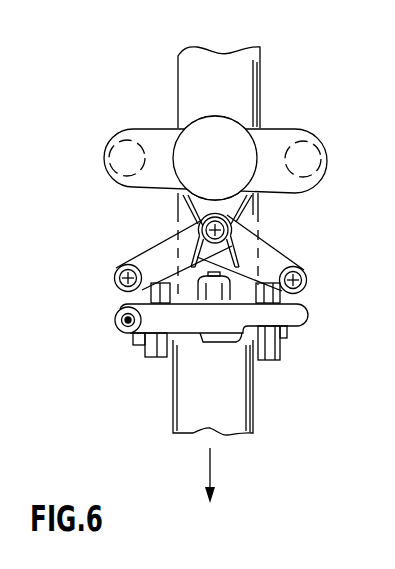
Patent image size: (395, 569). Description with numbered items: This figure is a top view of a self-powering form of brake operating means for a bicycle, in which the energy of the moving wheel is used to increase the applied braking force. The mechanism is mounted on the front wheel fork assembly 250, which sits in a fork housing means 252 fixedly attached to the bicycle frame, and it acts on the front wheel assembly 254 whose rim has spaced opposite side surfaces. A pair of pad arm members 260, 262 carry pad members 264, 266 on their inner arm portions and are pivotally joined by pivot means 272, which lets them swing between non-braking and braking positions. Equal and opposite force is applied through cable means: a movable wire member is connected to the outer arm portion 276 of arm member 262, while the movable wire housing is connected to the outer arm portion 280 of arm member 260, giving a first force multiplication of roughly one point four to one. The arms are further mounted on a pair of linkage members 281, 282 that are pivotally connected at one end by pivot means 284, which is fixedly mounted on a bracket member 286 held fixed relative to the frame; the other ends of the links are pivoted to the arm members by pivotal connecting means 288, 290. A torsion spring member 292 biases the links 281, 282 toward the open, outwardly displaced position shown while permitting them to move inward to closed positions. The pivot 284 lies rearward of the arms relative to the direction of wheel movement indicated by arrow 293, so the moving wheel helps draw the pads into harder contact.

The front wheel fork assembly 250 is at (280, 124).
The fork housing means 252 is at (212, 110).
The front wheel assembly 254 is at (256, 436).
The pad arm member 260 is at (202, 312).
The pad arm member 262 is at (202, 305).
The pad member 264 is at (145, 357).
The pad member 266 is at (277, 358).
The pivot means 272 is at (212, 342).
The outer arm portion 276 is at (117, 303).
The outer arm portion 280 is at (115, 320).
The linkage member 281 is at (160, 250).
The linkage member 282 is at (262, 258).
The pivot means 284 is at (254, 207).
The bracket member 286 is at (174, 207).
The pivotal connecting means 288 is at (119, 268).
The pivotal connecting means 290 is at (305, 275).
The torsion spring member 292 is at (232, 248).
The arrow 293 is at (213, 465).